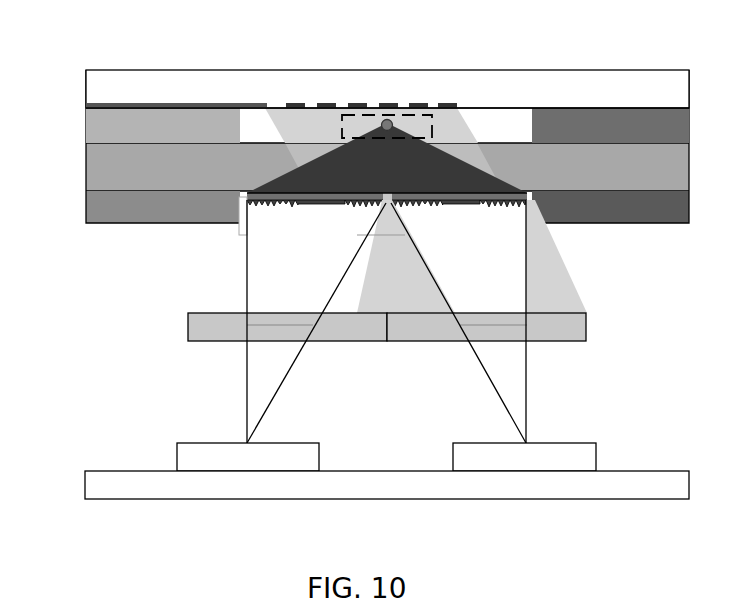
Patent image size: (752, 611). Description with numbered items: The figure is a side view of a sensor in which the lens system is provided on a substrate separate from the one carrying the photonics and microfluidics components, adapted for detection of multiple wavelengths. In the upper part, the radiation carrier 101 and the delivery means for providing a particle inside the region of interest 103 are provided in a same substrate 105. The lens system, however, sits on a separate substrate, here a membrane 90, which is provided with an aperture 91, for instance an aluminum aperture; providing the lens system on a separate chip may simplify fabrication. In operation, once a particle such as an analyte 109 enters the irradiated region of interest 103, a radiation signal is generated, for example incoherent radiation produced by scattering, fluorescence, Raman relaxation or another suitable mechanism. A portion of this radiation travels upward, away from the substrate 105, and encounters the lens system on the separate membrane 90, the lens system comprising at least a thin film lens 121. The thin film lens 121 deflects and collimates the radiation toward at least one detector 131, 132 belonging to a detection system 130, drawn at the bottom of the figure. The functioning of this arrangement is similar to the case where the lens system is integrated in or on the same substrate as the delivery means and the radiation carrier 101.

The membrane 90 is at (117, 168).
The aperture 91 is at (108, 203).
The radiation carrier 101 is at (86, 108).
The region of interest 103 is at (409, 115).
The substrate 105 is at (624, 88).
The analyte 109 is at (390, 120).
The thin film lens 121 is at (455, 212).
The detection system 130 is at (616, 527).
The detector 131 is at (202, 452).
The detector 132 is at (563, 453).